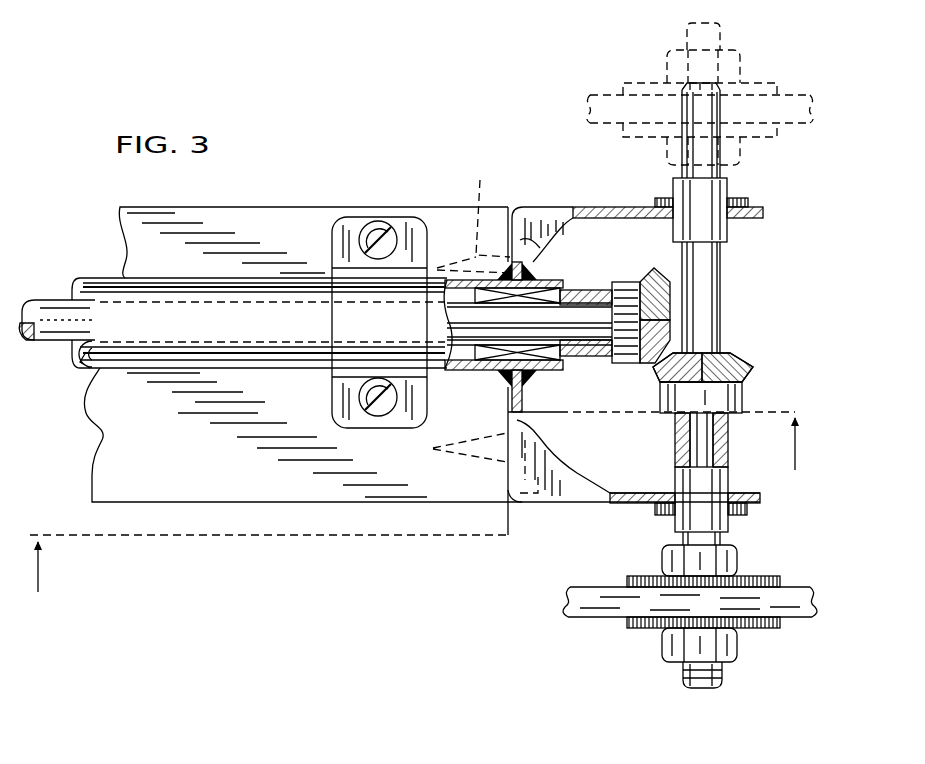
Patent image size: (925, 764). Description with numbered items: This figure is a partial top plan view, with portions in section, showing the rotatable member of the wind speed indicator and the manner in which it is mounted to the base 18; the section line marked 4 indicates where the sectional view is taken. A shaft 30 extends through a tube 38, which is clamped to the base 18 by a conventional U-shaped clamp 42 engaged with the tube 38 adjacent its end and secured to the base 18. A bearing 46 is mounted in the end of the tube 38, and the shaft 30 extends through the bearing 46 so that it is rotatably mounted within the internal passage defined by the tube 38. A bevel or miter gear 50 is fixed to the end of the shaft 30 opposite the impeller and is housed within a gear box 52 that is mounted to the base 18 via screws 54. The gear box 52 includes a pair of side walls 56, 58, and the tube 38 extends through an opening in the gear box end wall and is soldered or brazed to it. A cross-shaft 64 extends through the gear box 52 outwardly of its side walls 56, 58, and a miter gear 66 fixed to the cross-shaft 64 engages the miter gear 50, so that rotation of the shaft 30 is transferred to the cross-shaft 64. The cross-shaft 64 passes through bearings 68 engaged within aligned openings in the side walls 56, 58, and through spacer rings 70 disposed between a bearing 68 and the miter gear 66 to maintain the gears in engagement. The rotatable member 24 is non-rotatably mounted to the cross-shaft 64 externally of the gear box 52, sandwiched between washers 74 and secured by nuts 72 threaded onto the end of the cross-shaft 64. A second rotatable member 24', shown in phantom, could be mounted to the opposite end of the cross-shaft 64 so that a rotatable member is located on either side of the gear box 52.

The base 18 is at (430, 204).
The rotatable member 24 is at (684, 631).
The rotatable member 24' is at (660, 94).
The shaft 30 is at (52, 342).
The tube 38 is at (86, 278).
The U-shaped clamp 42 is at (329, 243).
The bearing 46 is at (478, 345).
The bevel or miter gear 50 is at (640, 275).
The gear box 52 is at (583, 204).
The screw 54 is at (553, 436).
The side wall 56 is at (632, 206).
The side wall 58 is at (615, 505).
The cross-shaft 64 is at (722, 312).
The miter gear 66 is at (745, 385).
The bearing 68 is at (731, 229).
The spacer ring 70 is at (676, 462).
The nut 72 is at (736, 560).
The washer 74 is at (766, 576).
The section line 4- 4 is at (417, 487).